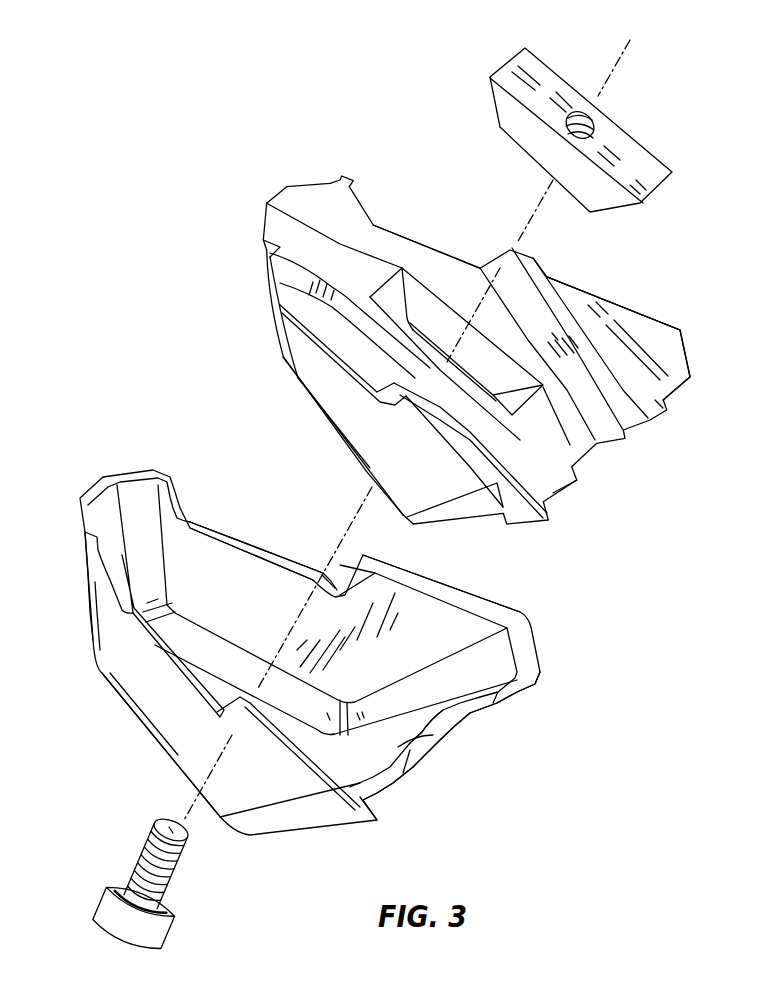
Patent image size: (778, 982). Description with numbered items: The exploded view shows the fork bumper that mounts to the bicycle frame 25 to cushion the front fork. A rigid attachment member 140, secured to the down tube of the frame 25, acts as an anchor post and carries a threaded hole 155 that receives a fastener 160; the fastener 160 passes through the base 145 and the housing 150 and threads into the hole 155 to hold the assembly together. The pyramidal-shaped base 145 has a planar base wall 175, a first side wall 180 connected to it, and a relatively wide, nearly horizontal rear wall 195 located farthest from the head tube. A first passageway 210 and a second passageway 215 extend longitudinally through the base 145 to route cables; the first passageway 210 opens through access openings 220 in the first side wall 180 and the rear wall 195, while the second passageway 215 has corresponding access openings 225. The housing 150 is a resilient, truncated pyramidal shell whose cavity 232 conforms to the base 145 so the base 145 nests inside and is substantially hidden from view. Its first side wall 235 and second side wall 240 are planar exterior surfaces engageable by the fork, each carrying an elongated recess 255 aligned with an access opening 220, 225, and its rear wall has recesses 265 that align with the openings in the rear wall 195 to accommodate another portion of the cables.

The frame 25 is at (618, 325).
The attachment member 140 is at (505, 70).
The base 145 is at (276, 197).
The housing 150 is at (97, 490).
The threaded hole 155 is at (629, 124).
The fastener 160 is at (130, 862).
The base wall 175 is at (640, 328).
The first side wall 180 is at (350, 413).
The rear wall 195 is at (433, 735).
The first passageway 210 is at (365, 358).
The second passageway 215 is at (452, 264).
The access opening 220 is at (297, 317).
The access opening 225 is at (397, 230).
The cavity 232 is at (240, 580).
The first side wall 235 is at (150, 702).
The second side wall 240 is at (462, 622).
The elongated recess 255 is at (205, 532).
The recess 265 is at (472, 712).